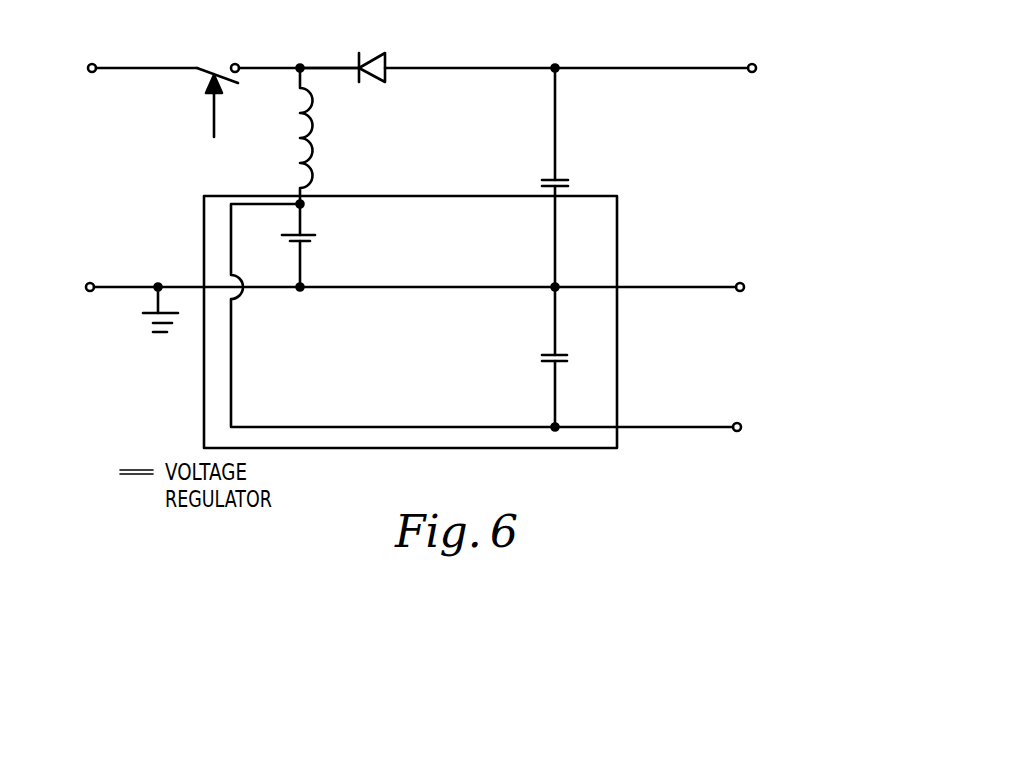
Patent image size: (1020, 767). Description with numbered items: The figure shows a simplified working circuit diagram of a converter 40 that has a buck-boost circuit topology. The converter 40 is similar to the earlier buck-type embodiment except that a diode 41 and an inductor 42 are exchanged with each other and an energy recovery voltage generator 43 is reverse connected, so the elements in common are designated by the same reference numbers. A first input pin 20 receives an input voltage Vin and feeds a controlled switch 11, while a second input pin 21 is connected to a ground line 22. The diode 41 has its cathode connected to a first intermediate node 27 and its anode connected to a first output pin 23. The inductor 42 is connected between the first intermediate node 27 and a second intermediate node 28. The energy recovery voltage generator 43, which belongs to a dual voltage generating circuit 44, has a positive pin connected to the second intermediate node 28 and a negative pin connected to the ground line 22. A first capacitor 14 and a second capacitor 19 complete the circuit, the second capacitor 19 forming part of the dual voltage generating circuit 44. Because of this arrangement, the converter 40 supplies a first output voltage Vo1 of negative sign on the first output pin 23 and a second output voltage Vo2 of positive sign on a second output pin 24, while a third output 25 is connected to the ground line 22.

The controlled switch 11 is at (224, 80).
The first capacitor 14 is at (570, 178).
The second capacitor 19 is at (570, 357).
The first input pin 20 is at (92, 74).
The second input pin 21 is at (89, 281).
The ground line 22 is at (155, 322).
The first output pin 23 is at (747, 63).
The second output pin 24 is at (735, 434).
The third output 25 is at (744, 293).
The first intermediate node 27 is at (318, 68).
The second intermediate node 28 is at (302, 206).
The converter 40 is at (492, 250).
The diode 41 is at (368, 73).
The inductor 42 is at (293, 154).
The energy recovery voltage generator 43 is at (313, 240).
The dual voltage generating circuit 44 is at (592, 253).